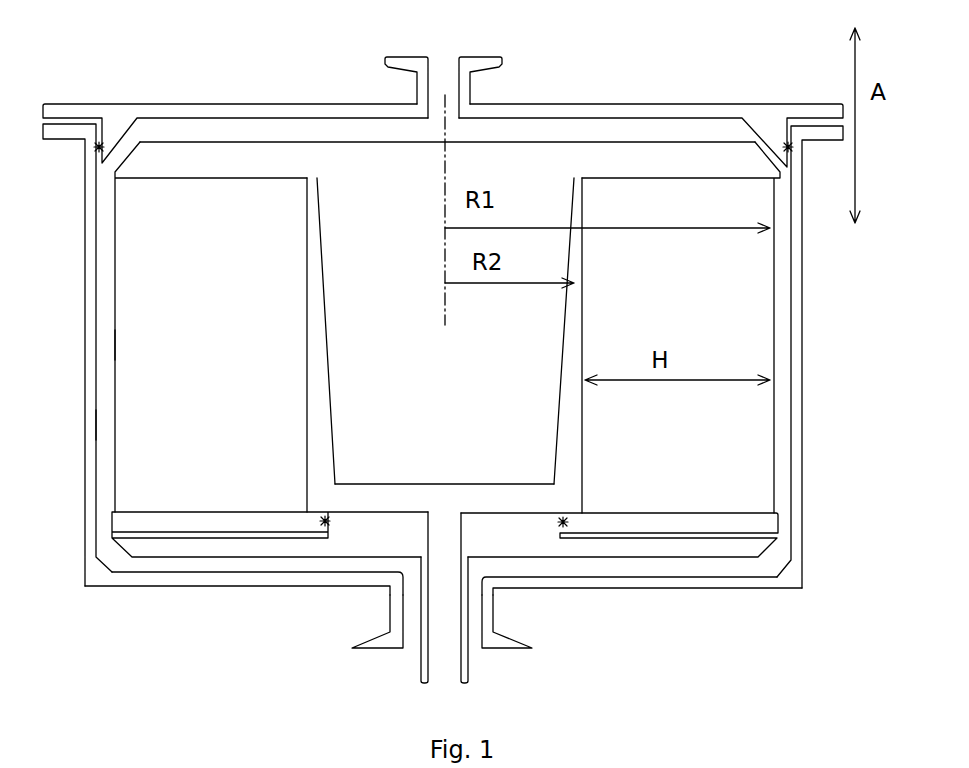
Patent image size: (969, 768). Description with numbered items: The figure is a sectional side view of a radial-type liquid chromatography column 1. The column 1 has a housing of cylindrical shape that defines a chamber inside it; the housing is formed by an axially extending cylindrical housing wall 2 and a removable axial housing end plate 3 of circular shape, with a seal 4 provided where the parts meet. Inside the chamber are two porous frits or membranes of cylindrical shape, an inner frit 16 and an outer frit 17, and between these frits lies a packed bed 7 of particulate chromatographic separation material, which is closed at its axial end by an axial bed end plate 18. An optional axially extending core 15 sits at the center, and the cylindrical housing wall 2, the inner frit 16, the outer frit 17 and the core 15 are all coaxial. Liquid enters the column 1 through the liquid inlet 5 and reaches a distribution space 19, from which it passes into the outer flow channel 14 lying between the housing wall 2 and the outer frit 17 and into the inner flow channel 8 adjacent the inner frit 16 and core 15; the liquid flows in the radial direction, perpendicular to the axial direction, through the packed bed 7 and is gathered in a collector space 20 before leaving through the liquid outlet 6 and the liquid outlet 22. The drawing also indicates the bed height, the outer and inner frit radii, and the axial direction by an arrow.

The column 1 is at (833, 388).
The cylindrical housing wall 2 is at (85, 287).
The axial housing end plate 3 is at (192, 103).
The seal 4 is at (95, 150).
The liquid inlet 5 is at (437, 52).
The liquid outlet 6 is at (468, 670).
The packed bed 7 is at (152, 343).
The inner flow channel 8 is at (318, 353).
The outer flow channel 14 is at (105, 425).
The core 15 is at (353, 475).
The inner frit 16 is at (117, 212).
The outer frit 17 is at (310, 450).
The axial bed end plate 18 is at (710, 160).
The distribution space 19 is at (303, 128).
The collector space 20 is at (517, 490).
The liquid outlet 22 is at (388, 617).